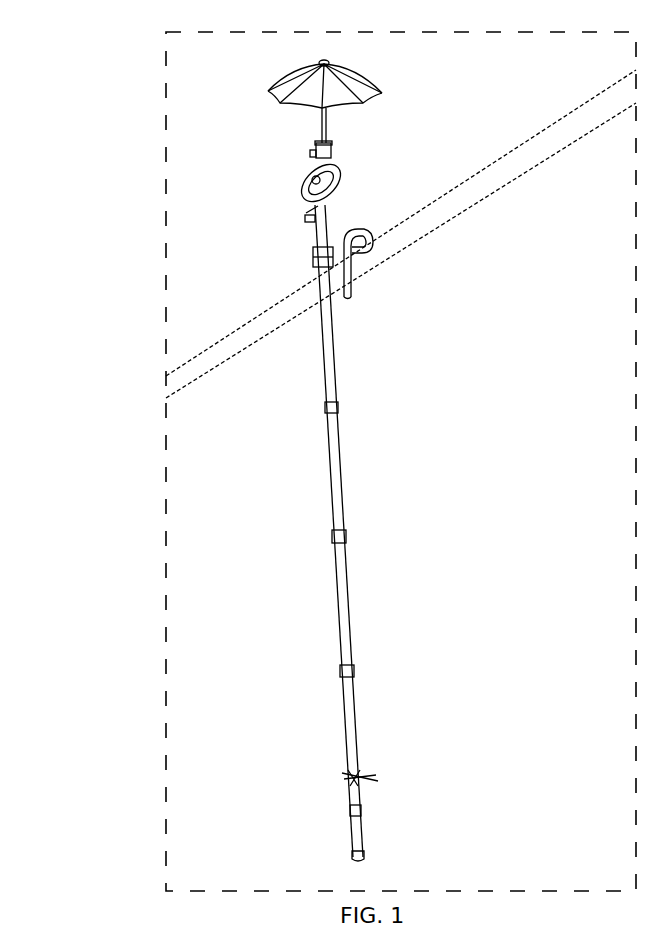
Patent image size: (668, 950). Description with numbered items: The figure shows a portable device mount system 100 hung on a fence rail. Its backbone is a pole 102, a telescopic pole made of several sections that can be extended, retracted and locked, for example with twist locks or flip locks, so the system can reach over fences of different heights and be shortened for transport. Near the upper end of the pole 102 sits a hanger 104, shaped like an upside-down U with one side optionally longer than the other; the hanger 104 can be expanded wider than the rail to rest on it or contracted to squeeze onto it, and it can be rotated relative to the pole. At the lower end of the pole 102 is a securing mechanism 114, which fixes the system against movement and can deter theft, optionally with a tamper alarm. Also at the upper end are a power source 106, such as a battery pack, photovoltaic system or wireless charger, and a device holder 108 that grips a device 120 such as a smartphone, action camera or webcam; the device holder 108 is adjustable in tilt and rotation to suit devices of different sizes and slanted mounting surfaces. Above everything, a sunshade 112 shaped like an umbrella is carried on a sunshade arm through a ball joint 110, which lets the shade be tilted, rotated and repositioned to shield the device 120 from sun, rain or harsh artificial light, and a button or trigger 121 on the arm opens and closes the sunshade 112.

The portable device mount system 100 is at (128, 127).
The pole 102 is at (351, 413).
The hanger 104 is at (370, 240).
The power source 106 is at (311, 240).
The device holder 108 is at (330, 179).
The ball joint 110 is at (313, 146).
The sunshade 112 is at (339, 52).
The securing mechanism 114 is at (368, 773).
The device 120 is at (316, 178).
The button or trigger 121 is at (480, 180).